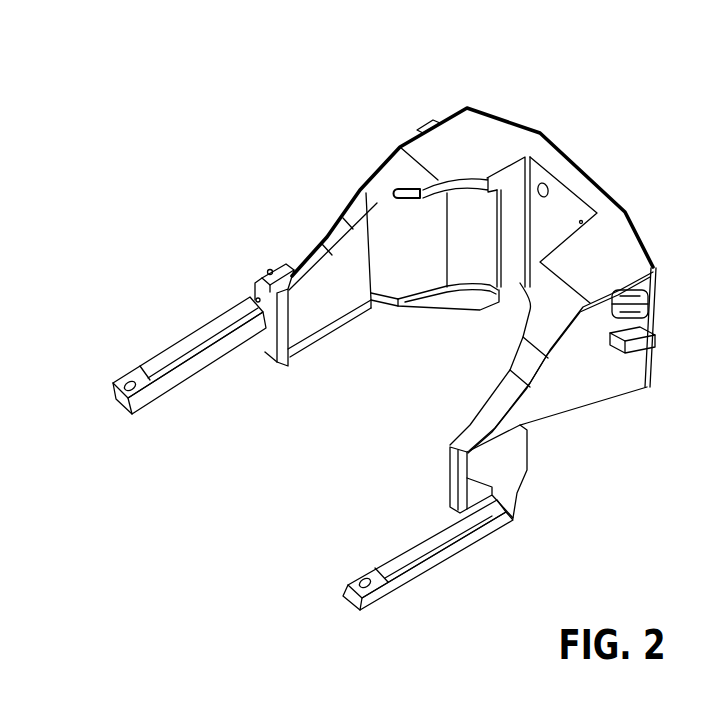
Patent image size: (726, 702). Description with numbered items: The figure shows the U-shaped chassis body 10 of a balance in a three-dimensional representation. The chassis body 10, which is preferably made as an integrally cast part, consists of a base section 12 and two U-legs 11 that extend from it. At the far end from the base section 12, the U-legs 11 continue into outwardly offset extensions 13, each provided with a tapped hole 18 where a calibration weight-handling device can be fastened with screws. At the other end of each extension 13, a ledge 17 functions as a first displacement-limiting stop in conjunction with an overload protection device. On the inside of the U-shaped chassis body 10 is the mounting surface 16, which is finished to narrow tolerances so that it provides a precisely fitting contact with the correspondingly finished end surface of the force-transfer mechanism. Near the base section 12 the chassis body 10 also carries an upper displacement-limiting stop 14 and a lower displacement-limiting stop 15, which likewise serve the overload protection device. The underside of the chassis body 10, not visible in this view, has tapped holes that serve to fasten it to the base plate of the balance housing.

The chassis body 10 is at (470, 83).
The U-legs 11 is at (398, 168).
The base section 12 is at (563, 173).
The extensions 13 is at (183, 352).
The upper displacement-limiting stop 14 is at (632, 295).
The lower displacement-limiting stop 15 is at (643, 340).
The mounting surface 16 is at (568, 215).
The ledge 17 is at (272, 272).
The tapped holes 18 is at (128, 380).